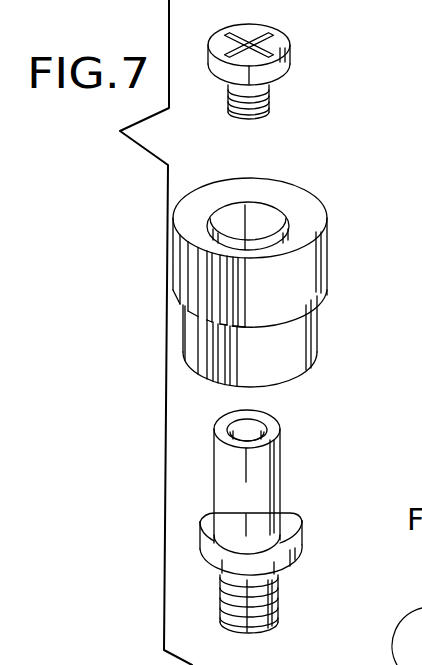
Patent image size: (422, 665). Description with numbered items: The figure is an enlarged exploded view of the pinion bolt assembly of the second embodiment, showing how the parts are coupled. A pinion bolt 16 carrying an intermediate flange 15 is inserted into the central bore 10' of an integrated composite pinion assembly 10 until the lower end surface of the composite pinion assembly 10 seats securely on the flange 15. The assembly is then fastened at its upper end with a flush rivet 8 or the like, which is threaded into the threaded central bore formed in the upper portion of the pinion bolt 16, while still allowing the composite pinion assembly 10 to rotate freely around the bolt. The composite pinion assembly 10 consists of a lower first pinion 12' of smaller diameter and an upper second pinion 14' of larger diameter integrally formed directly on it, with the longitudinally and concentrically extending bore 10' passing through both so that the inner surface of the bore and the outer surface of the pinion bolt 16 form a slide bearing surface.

The flush rivet 8 is at (291, 62).
The composite pinion assembly 10 is at (293, 265).
The central bore 10' is at (274, 197).
The second pinion 14' is at (250, 272).
The first pinion 12' is at (250, 341).
The intermediate flange 15 is at (271, 521).
The pinion bolt 16 is at (258, 512).